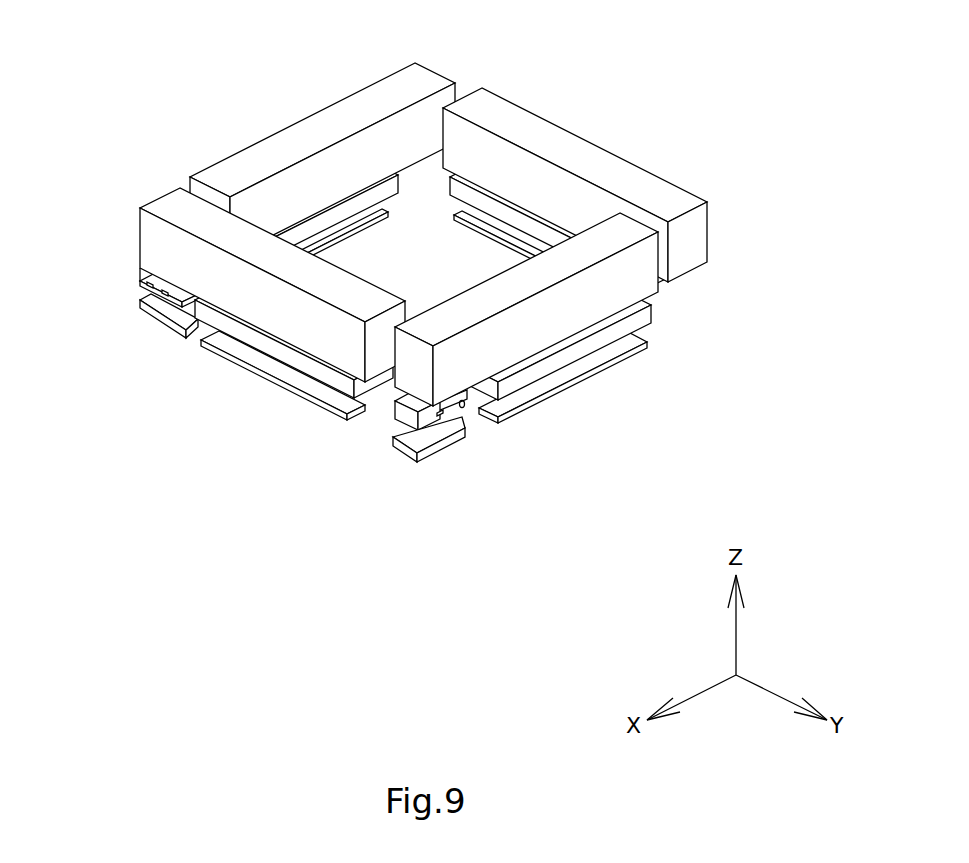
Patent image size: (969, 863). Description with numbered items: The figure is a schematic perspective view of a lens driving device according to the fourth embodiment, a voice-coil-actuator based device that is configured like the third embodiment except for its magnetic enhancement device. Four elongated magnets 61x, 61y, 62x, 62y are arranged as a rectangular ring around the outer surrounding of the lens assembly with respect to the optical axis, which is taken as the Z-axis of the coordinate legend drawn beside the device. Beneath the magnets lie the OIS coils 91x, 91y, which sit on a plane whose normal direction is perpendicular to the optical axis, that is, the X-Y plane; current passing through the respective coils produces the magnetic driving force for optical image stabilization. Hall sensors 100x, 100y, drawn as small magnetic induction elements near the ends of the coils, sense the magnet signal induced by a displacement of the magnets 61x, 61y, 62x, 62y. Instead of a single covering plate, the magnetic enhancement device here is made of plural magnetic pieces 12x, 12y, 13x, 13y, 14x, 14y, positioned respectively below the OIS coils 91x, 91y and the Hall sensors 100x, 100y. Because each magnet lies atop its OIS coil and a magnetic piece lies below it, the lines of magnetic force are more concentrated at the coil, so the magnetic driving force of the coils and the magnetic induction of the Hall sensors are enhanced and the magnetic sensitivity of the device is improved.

The magnet 62x is at (328, 118).
The magnet 62y is at (618, 160).
The magnet 61x is at (647, 284).
The magnet 61y is at (158, 240).
The magnetic piece 13x is at (323, 242).
The magnetic piece 13y is at (527, 240).
The OIS coil 91x is at (575, 350).
The OIS coil 91y is at (270, 353).
The magnetic piece 12x is at (532, 395).
The magnetic piece 12y is at (326, 400).
The magnetic piece 14x is at (413, 438).
The magnetic piece 14y is at (160, 305).
The Hall sensor 100x is at (462, 405).
The Hall sensor 100y is at (150, 290).